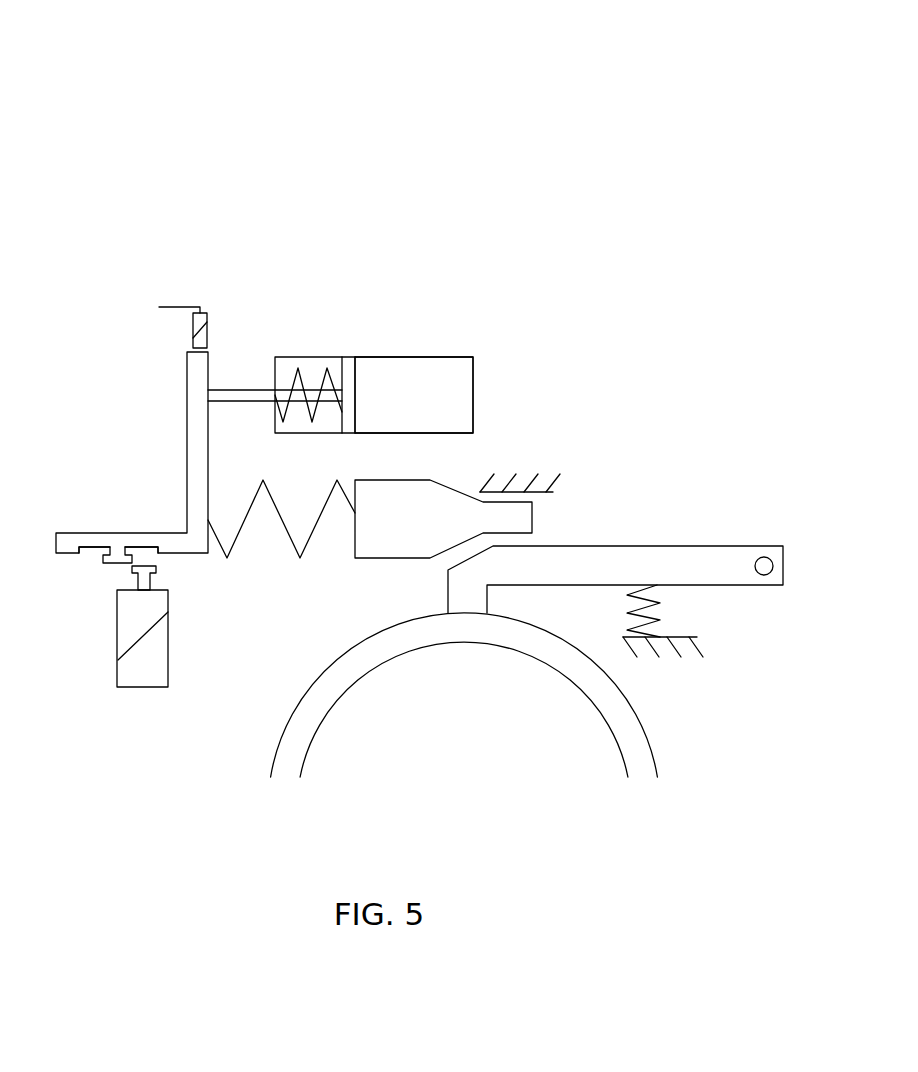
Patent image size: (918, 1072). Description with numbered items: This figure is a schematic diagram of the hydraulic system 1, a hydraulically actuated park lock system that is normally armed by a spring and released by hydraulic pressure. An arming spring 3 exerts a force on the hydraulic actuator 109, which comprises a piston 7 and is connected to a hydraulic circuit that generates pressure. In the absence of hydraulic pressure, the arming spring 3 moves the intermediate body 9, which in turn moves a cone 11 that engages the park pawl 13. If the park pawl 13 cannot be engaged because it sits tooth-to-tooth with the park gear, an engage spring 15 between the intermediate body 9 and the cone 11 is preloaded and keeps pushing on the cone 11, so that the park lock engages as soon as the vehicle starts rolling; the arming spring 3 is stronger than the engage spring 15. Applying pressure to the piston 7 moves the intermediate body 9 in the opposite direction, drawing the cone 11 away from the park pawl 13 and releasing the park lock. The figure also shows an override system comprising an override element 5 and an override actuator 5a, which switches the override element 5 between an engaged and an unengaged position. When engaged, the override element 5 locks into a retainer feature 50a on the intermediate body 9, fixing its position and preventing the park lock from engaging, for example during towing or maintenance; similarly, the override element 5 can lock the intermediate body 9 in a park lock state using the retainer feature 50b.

The hydraulic system 1 is at (80, 66).
The arming spring 3 is at (287, 326).
The hydraulic actuator 109 is at (381, 321).
The piston 7 is at (461, 343).
The intermediate body 9 is at (129, 526).
The retainer feature 50a is at (163, 536).
The retainer feature 50b is at (89, 538).
The override element 5 is at (115, 581).
The override actuator 5a is at (102, 677).
The engage spring 15 is at (238, 575).
The cone 11 is at (463, 475).
The park pawl 13 is at (722, 541).